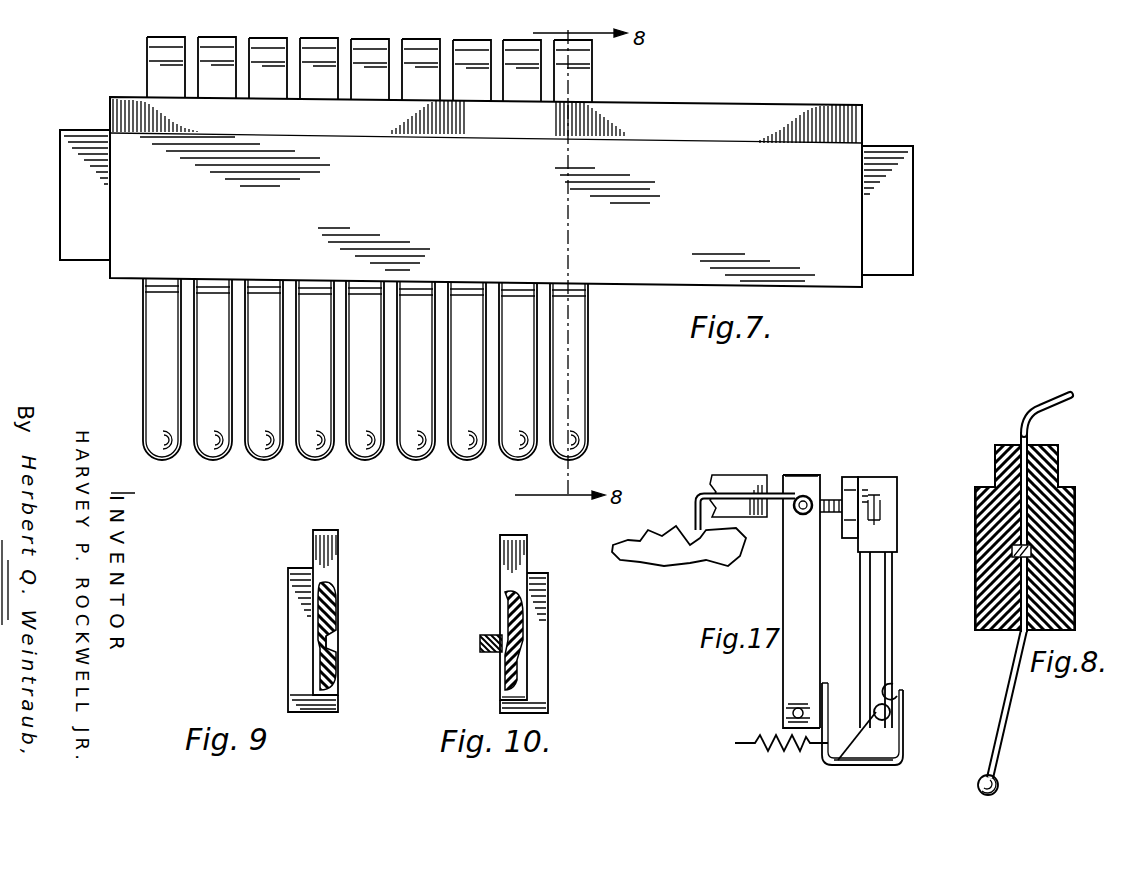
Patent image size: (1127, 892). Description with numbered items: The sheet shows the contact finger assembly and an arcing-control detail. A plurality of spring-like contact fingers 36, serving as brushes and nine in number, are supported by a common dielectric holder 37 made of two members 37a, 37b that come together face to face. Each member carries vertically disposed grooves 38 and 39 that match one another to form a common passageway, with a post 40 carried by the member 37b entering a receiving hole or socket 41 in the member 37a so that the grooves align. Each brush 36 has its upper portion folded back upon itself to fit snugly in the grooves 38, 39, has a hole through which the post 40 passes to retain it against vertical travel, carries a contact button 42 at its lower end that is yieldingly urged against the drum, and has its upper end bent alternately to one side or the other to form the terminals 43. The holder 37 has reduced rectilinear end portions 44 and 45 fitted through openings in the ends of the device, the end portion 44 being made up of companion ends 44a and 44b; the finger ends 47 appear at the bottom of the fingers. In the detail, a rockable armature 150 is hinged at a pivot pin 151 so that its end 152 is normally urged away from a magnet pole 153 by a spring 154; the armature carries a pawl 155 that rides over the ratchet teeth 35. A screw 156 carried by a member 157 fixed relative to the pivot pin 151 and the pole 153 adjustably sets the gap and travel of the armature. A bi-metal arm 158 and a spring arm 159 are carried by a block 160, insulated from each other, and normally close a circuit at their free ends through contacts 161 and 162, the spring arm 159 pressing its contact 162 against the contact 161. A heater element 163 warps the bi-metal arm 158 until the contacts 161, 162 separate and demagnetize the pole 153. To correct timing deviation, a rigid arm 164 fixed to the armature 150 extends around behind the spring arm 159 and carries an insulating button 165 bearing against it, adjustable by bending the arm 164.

In FIG. 17, the ratchet wheel 35 is at (665, 560).
In FIG. 7, the contact finger 36 is at (155, 81).
In FIG. 8, the contact finger 36 is at (998, 723).
In FIG. 7, the dielectric holder 37 is at (853, 155).
In FIG. 8, the dielectric holder 37 is at (995, 447).
In FIG. 9, the holder member 37a is at (290, 609).
In FIG. 8, the holder member 37a is at (978, 492).
In FIG. 10, the holder member 37b is at (548, 608).
In FIG. 8, the holder member 37b is at (1068, 512).
In FIG. 9, the groove 38 is at (338, 604).
In FIG. 10, the groove 39 is at (500, 607).
In FIG. 10, the post 40 is at (480, 640).
In FIG. 8, the post 40 is at (1010, 550).
In FIG. 9, the socket 41 is at (338, 637).
In FIG. 8, the contact button 42 is at (975, 786).
In FIG. 7, the terminal 43 is at (157, 40).
In FIG. 8, the terminal 43 is at (1058, 405).
In FIG. 7, the reduced end portion 44 is at (903, 203).
In FIG. 9, the companion end 44a is at (320, 684).
In FIG. 10, the companion end 44b is at (520, 690).
In FIG. 7, the reduced end portion 45 is at (70, 226).
In FIG. 7, the finger end 47 is at (263, 443).
In FIG. 17, the rockable armature 150 is at (785, 592).
In FIG. 17, the pivot pin 151 is at (792, 713).
In FIG. 17, the armature end 152 is at (800, 476).
In FIG. 17, the magnet pole 153 is at (753, 470).
In FIG. 17, the spring 154 is at (787, 755).
In FIG. 17, the pawl 155 is at (696, 514).
In FIG. 17, the screw 156 is at (827, 514).
In FIG. 17, the member 157 is at (848, 477).
In FIG. 17, the bi-metal arm 158 is at (832, 765).
In FIG. 17, the spring arm 159 is at (887, 630).
In FIG. 17, the block 160 is at (885, 477).
In FIG. 17, the contact 161 is at (856, 736).
In FIG. 17, the contact 162 is at (885, 715).
In FIG. 17, the heater element 163 is at (872, 652).
In FIG. 17, the arm 164 is at (868, 766).
In FIG. 17, the insulating button 165 is at (905, 688).